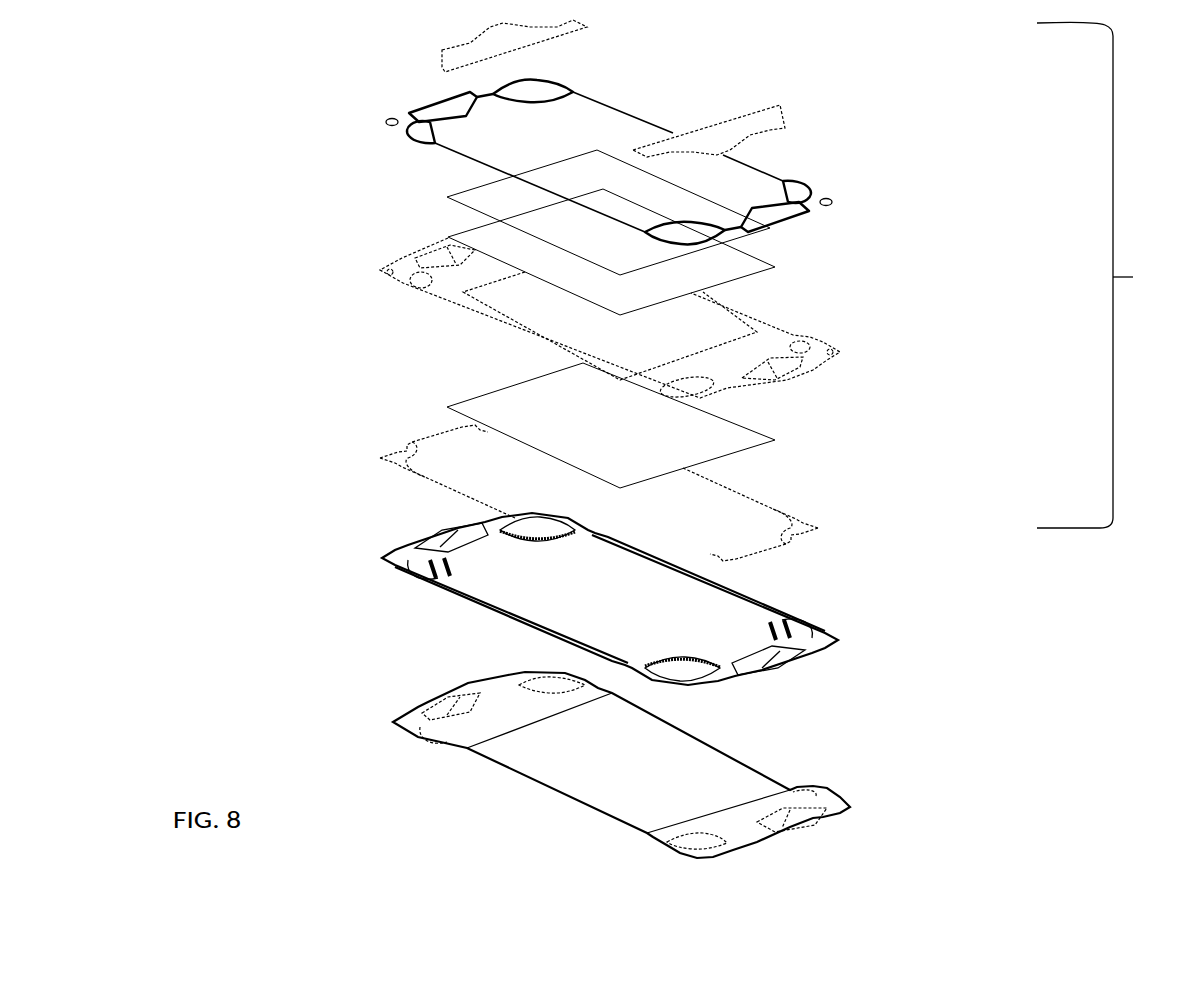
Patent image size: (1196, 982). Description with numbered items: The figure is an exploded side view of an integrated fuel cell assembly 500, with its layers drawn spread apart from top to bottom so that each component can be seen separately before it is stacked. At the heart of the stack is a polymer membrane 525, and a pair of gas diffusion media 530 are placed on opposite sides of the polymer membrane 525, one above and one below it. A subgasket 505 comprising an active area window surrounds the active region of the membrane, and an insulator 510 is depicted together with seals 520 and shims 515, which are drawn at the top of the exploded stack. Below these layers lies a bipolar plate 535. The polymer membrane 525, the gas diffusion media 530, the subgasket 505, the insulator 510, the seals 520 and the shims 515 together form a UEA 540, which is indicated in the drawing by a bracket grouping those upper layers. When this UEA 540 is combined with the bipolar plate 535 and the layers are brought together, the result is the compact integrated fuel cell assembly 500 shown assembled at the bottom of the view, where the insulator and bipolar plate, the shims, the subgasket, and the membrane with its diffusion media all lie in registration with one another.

The integrated fuel cell assembly 500 is at (838, 753).
The subgasket 505 is at (752, 344).
The insulator 510 is at (820, 537).
The shims 515 is at (753, 122).
The seals 520 is at (790, 183).
The polymer membrane 525 is at (712, 263).
The gas diffusion media 530 is at (625, 263).
The bipolar plate 535 is at (812, 628).
The UEA 540 is at (1113, 275).